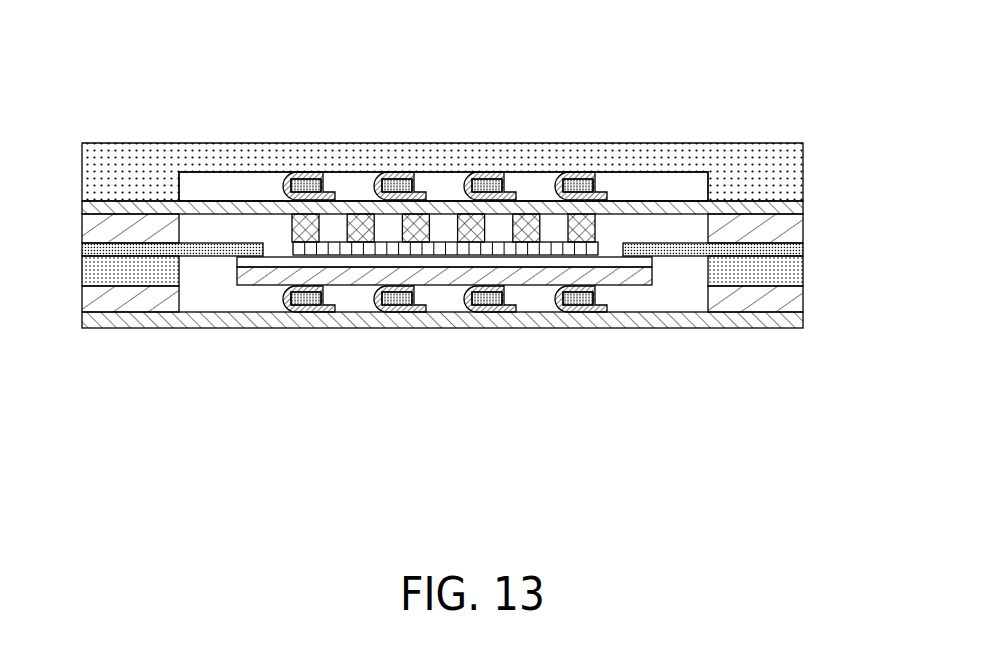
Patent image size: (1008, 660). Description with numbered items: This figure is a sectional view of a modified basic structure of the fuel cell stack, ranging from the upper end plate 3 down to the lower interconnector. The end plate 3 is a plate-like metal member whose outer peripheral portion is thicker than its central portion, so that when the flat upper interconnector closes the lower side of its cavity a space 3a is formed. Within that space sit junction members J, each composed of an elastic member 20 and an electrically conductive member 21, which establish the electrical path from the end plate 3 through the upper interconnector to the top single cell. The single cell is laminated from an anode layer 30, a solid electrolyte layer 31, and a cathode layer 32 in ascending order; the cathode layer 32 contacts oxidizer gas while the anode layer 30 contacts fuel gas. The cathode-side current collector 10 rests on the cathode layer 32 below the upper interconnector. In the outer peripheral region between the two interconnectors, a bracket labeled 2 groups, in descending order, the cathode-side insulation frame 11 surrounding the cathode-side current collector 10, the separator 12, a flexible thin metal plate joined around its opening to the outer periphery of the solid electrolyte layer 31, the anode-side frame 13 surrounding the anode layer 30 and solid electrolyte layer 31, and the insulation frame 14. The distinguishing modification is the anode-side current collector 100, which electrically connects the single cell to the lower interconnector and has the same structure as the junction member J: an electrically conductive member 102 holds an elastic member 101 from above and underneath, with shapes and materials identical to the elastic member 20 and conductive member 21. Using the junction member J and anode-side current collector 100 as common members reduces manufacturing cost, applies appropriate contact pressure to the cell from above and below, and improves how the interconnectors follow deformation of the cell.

The wiring board / laminated substrate 2 is at (75, 215).
The upper end plate 3 is at (477, 138).
The space 3a is at (655, 186).
The cathode-side current collector 10 is at (292, 225).
The cathode-side insulation frame 11 is at (805, 228).
The separator 12 is at (805, 250).
The anode-side frame 13 is at (805, 272).
The insulation frame 14 is at (805, 297).
The junction member J is at (605, 67).
The elastic member 20 is at (563, 173).
The electrically conductive member 21 is at (580, 173).
The anode layer 30 is at (637, 283).
The solid electrolyte layer 31 is at (605, 262).
The cathode layer 32 is at (530, 246).
The anode-side current collector 100 is at (283, 297).
The elastic member 101 is at (299, 311).
The electrically conductive member 102 is at (312, 308).